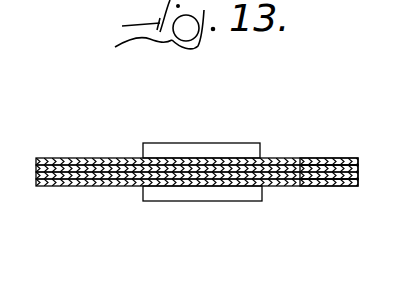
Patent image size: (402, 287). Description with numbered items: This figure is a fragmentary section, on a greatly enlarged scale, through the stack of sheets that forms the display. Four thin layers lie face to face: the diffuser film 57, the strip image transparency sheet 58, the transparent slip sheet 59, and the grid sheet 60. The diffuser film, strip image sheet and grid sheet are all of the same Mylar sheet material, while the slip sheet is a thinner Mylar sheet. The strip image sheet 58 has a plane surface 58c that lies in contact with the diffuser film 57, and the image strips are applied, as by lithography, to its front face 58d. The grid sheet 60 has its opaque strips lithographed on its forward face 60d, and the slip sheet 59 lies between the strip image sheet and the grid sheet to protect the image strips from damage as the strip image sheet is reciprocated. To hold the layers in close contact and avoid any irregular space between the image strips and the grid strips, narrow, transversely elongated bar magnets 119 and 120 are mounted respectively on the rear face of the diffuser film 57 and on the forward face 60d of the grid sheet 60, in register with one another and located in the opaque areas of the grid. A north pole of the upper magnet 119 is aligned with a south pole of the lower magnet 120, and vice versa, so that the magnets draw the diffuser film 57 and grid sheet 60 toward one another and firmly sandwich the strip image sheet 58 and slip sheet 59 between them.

The strip image transparency sheet 58 is at (35, 163).
The diffuser film 57 is at (93, 158).
The transparent slip sheet 59 is at (35, 186).
The grid sheet 60 is at (82, 188).
The plane surface 58c is at (358, 162).
The front face 58d is at (350, 185).
The forward face 60d is at (318, 188).
The bar magnet 119 is at (198, 143).
The bar magnet 120 is at (200, 194).